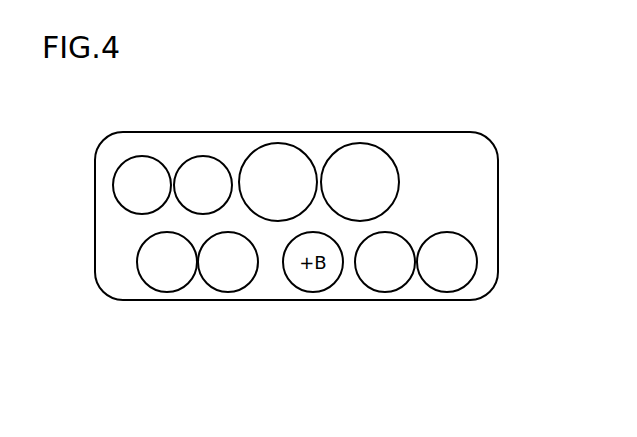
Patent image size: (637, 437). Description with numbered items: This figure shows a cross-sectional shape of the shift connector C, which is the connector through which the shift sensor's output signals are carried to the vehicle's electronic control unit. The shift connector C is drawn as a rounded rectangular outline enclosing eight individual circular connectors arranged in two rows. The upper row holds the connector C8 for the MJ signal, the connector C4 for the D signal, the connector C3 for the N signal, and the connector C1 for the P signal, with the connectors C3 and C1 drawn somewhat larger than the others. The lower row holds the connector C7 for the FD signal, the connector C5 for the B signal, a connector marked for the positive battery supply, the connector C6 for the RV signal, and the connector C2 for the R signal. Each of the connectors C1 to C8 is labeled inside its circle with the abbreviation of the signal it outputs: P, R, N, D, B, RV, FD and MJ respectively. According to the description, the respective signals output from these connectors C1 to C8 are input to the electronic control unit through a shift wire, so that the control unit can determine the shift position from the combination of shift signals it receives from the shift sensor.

The shift connector C is at (498, 214).
The connector for P signal C1 is at (360, 142).
The connector for R signal C2 is at (445, 291).
The connector for N signal C3 is at (278, 142).
The connector for D signal C4 is at (204, 155).
The connector for B signal C5 is at (226, 291).
The connector for RV signal C6 is at (383, 291).
The connector for FD signal C7 is at (166, 291).
The connector for MJ signal C8 is at (142, 155).